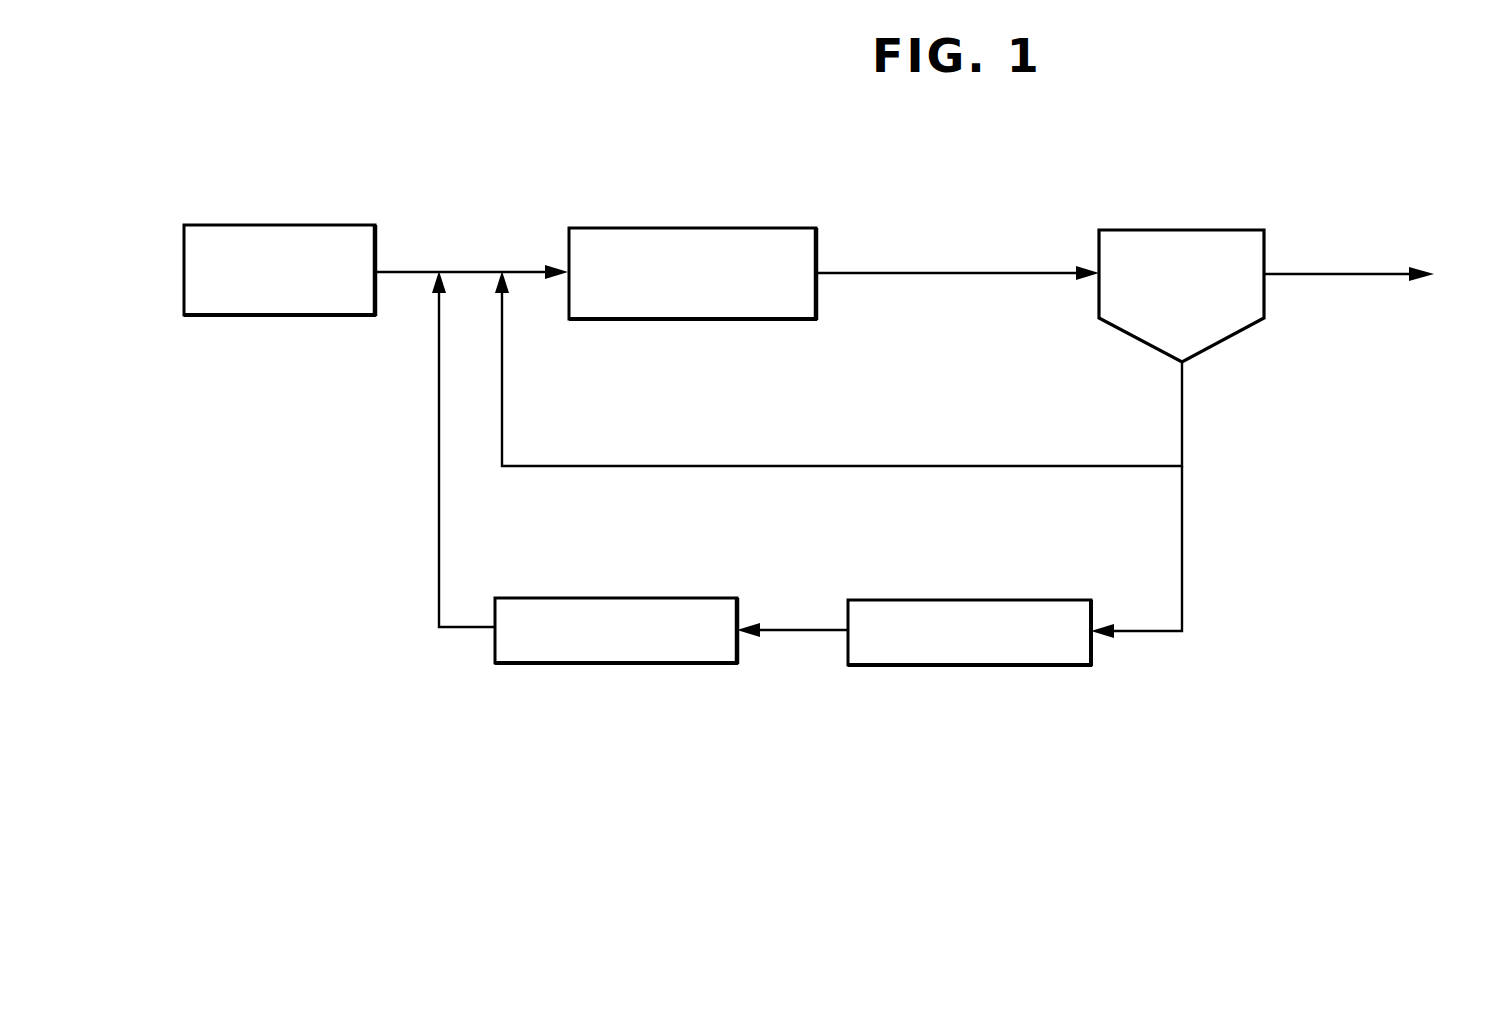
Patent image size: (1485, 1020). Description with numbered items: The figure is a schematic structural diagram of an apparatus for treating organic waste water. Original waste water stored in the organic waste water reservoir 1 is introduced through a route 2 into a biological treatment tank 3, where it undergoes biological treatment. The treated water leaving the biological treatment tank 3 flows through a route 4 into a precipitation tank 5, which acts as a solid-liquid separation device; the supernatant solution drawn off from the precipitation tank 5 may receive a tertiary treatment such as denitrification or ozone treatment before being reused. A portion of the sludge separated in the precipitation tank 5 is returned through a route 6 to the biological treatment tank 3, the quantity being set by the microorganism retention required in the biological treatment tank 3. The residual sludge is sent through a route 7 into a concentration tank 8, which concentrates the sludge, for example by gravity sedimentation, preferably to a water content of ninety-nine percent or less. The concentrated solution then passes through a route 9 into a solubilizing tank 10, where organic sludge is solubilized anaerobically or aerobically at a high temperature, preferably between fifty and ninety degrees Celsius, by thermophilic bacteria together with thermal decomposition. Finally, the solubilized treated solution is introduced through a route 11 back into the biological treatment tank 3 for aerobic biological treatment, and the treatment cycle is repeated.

The organic waste water reservoir 1 is at (278, 225).
The route 2 is at (468, 271).
The biological treatment tank 3 is at (693, 229).
The route 4 is at (930, 272).
The precipitation tank 5 is at (1190, 230).
The route 6 is at (766, 466).
The route 7 is at (1183, 586).
The concentration tank 8 is at (957, 666).
The route 9 is at (792, 630).
The solubilizing tank 10 is at (642, 664).
The route 11 is at (439, 473).